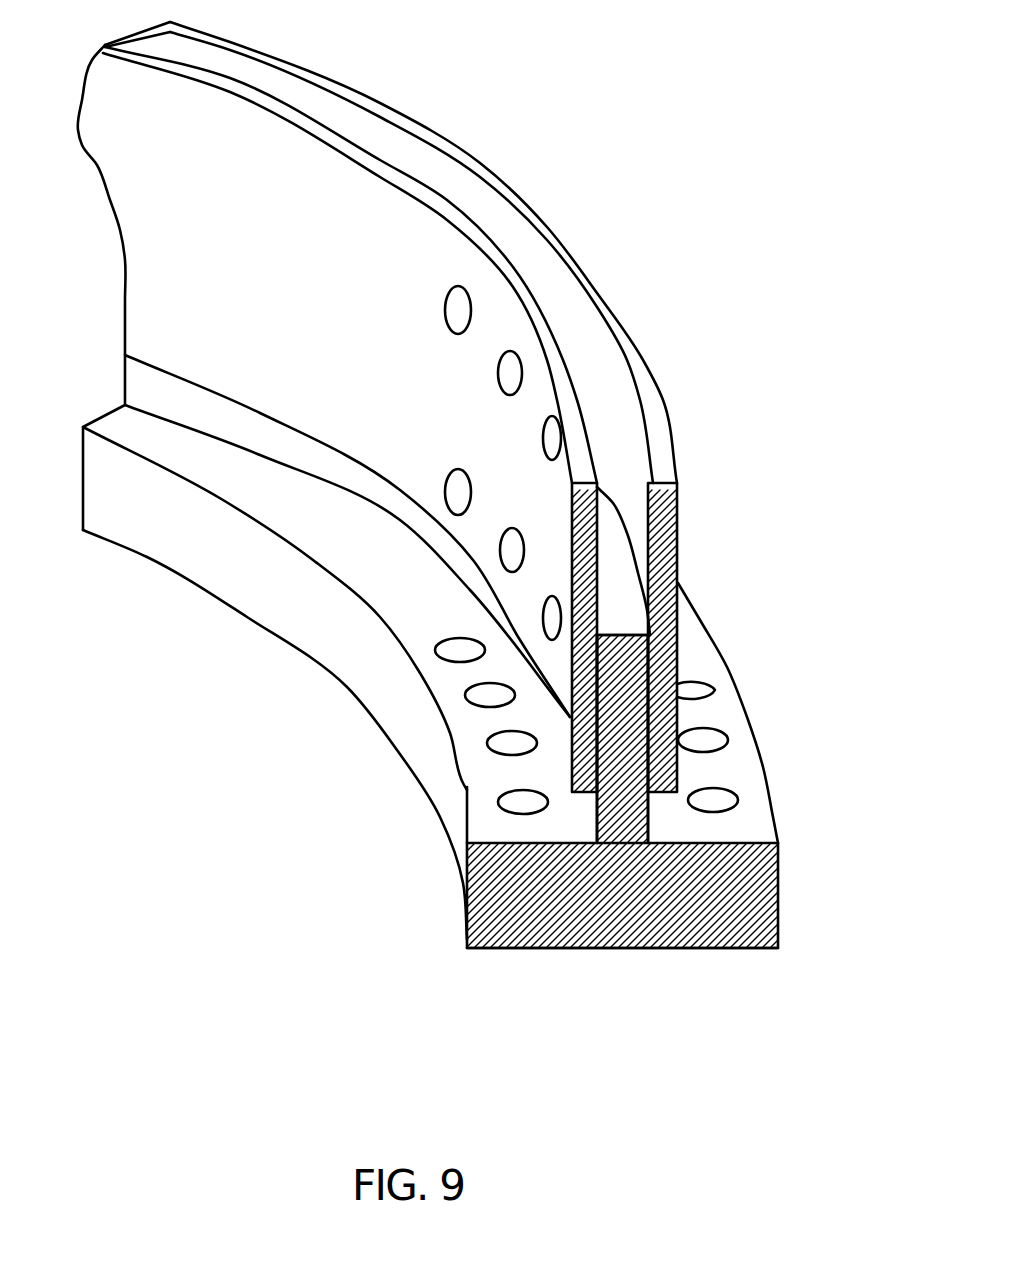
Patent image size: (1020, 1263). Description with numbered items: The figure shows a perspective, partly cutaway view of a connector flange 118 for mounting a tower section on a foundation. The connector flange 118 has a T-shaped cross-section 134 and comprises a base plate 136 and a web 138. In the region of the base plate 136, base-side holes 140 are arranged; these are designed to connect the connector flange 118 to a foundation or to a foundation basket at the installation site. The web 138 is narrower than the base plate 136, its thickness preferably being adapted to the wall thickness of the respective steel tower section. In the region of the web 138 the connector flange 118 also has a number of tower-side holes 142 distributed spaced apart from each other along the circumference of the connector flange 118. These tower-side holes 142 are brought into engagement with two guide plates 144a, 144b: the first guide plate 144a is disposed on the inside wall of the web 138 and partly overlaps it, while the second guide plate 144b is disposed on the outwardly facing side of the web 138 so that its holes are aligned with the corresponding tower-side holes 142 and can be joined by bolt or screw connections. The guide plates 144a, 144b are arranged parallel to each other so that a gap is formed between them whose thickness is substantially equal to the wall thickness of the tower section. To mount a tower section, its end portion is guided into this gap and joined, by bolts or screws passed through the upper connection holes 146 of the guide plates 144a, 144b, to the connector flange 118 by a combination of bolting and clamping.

The connector flange 118 is at (722, 447).
The T-shaped cross-section 134 is at (463, 915).
The base plate 136 is at (662, 948).
The web 138 is at (662, 702).
The base-side holes 140 is at (497, 793).
The tower-side holes 142 is at (450, 487).
The first guide plate 144a is at (390, 325).
The second guide plate 144b is at (490, 172).
The connection holes 146 is at (440, 312).